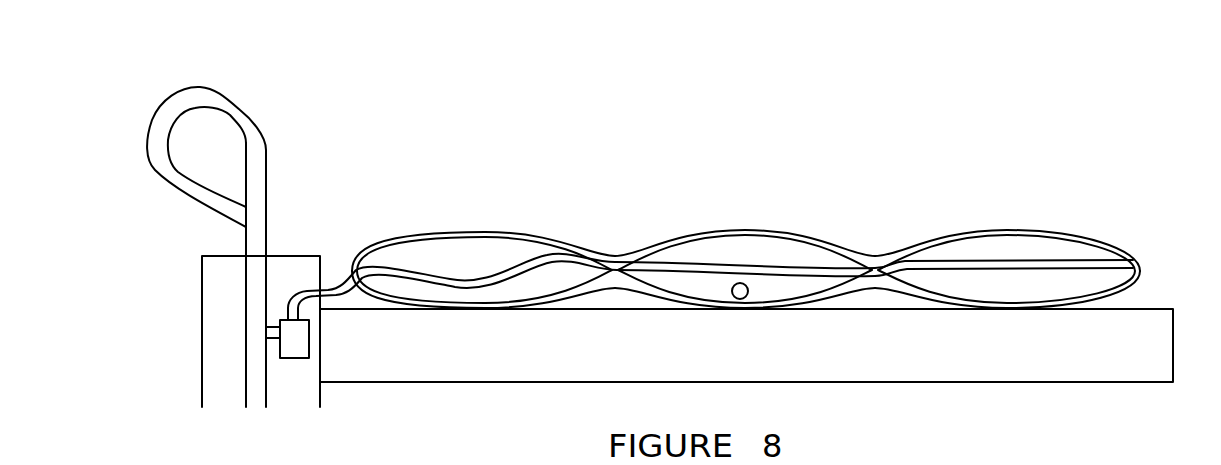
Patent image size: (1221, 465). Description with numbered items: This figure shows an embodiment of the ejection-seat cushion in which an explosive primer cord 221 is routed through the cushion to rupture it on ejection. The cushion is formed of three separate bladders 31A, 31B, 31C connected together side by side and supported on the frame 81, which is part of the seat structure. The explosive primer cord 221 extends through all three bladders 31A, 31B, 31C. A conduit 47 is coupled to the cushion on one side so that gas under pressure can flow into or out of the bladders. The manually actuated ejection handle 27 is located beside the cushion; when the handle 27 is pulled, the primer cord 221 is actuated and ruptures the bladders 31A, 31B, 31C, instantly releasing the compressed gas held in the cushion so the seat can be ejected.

The ejection handle 27 is at (245, 115).
The bladder 31A is at (483, 232).
The bladder 31B is at (743, 230).
The bladder 31C is at (1063, 233).
The explosive primer cord 221 is at (577, 267).
The conduit 47 is at (746, 284).
The frame 81 is at (988, 382).